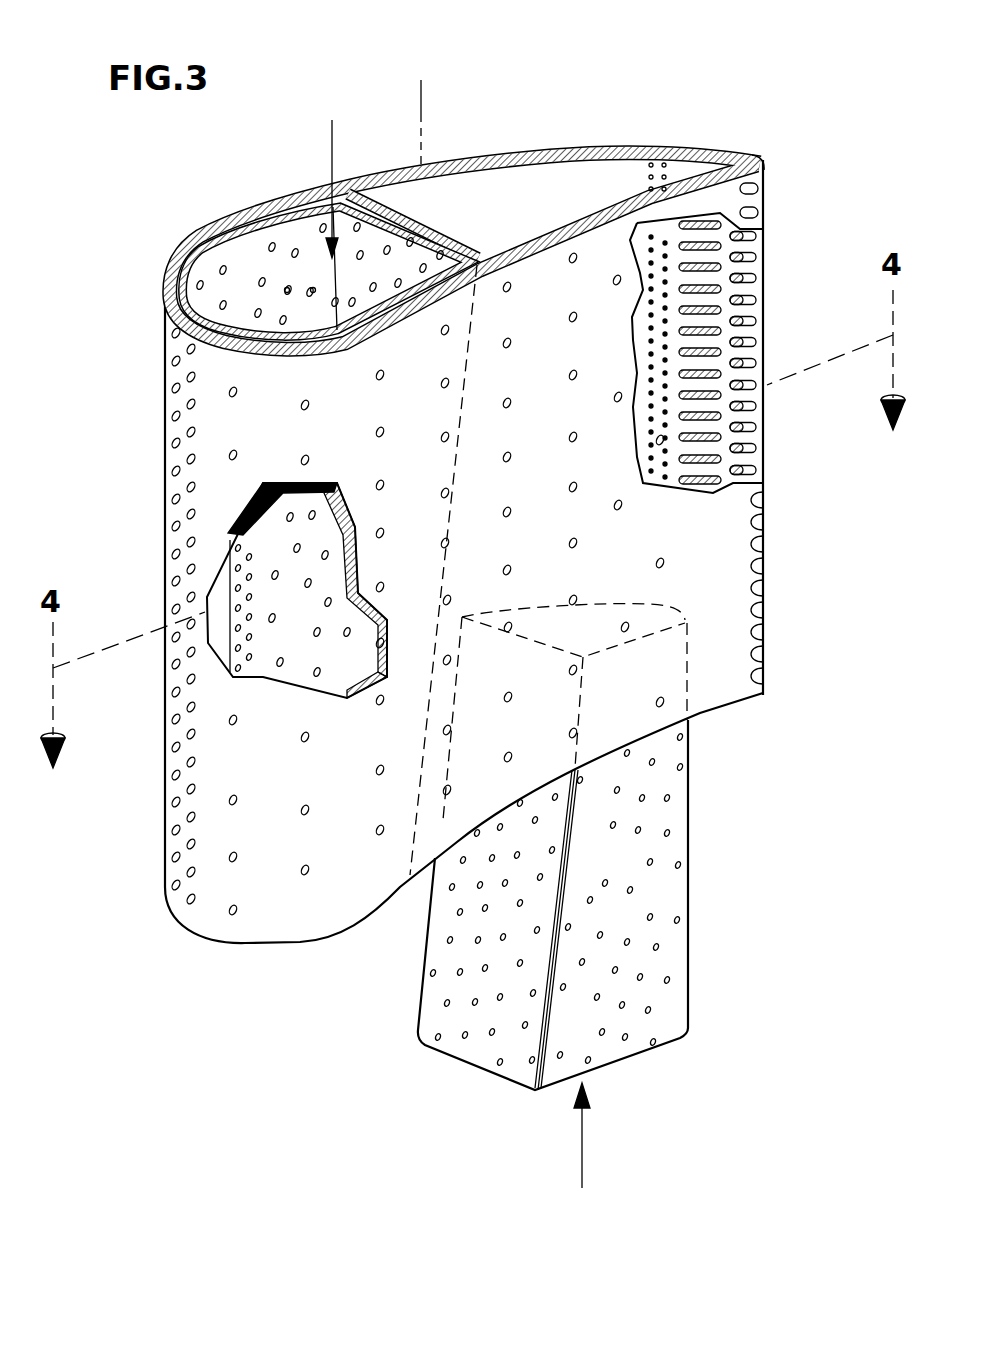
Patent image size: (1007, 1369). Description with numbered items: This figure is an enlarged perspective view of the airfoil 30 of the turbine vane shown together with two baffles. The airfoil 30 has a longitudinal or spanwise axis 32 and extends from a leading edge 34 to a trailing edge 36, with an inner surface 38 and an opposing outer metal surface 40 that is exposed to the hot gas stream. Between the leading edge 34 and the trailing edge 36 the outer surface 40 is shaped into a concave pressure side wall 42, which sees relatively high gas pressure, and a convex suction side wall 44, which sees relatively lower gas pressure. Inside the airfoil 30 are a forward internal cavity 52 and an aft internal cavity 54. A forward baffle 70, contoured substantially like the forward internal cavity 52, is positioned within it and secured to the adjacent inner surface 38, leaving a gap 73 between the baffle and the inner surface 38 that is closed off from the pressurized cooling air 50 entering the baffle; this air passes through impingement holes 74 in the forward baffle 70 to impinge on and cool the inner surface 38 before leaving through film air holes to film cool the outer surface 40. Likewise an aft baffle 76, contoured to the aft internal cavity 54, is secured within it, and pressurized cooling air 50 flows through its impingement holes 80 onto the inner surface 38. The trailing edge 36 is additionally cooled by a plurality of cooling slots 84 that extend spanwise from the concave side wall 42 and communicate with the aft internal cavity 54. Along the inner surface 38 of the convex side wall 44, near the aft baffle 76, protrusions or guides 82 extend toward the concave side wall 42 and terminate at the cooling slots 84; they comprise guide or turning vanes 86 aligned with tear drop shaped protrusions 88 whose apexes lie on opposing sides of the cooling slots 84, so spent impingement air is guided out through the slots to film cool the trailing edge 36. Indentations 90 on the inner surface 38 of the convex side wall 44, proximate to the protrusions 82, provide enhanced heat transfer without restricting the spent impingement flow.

The airfoil 30 is at (146, 256).
The longitudinal or span wise axis 32 is at (421, 122).
The leading edge 34 is at (190, 690).
The trailing edge 36 is at (767, 535).
The inner surface 38 is at (510, 187).
The outer metal surface 40 is at (557, 483).
The concave side wall or pressure side wall 42 is at (597, 223).
The convex side wall or suction side wall 44 is at (388, 180).
The pressurized cooling air 50 is at (459, 660).
The forward internal cavity 52 is at (247, 263).
The aft internal cavity 54 is at (567, 197).
The forward baffle 70 is at (290, 240).
The gap 73 is at (302, 198).
The impingement holes 74 is at (313, 290).
The aft baffle 76 is at (677, 1008).
The impingement holes 80 is at (646, 916).
The protrusions or guides 82 is at (701, 165).
The cooling slots 84 is at (752, 358).
The guide or turning vanes 86 is at (740, 293).
The tear drop shaped protrusions 88 is at (745, 413).
The indentations 90 is at (646, 324).